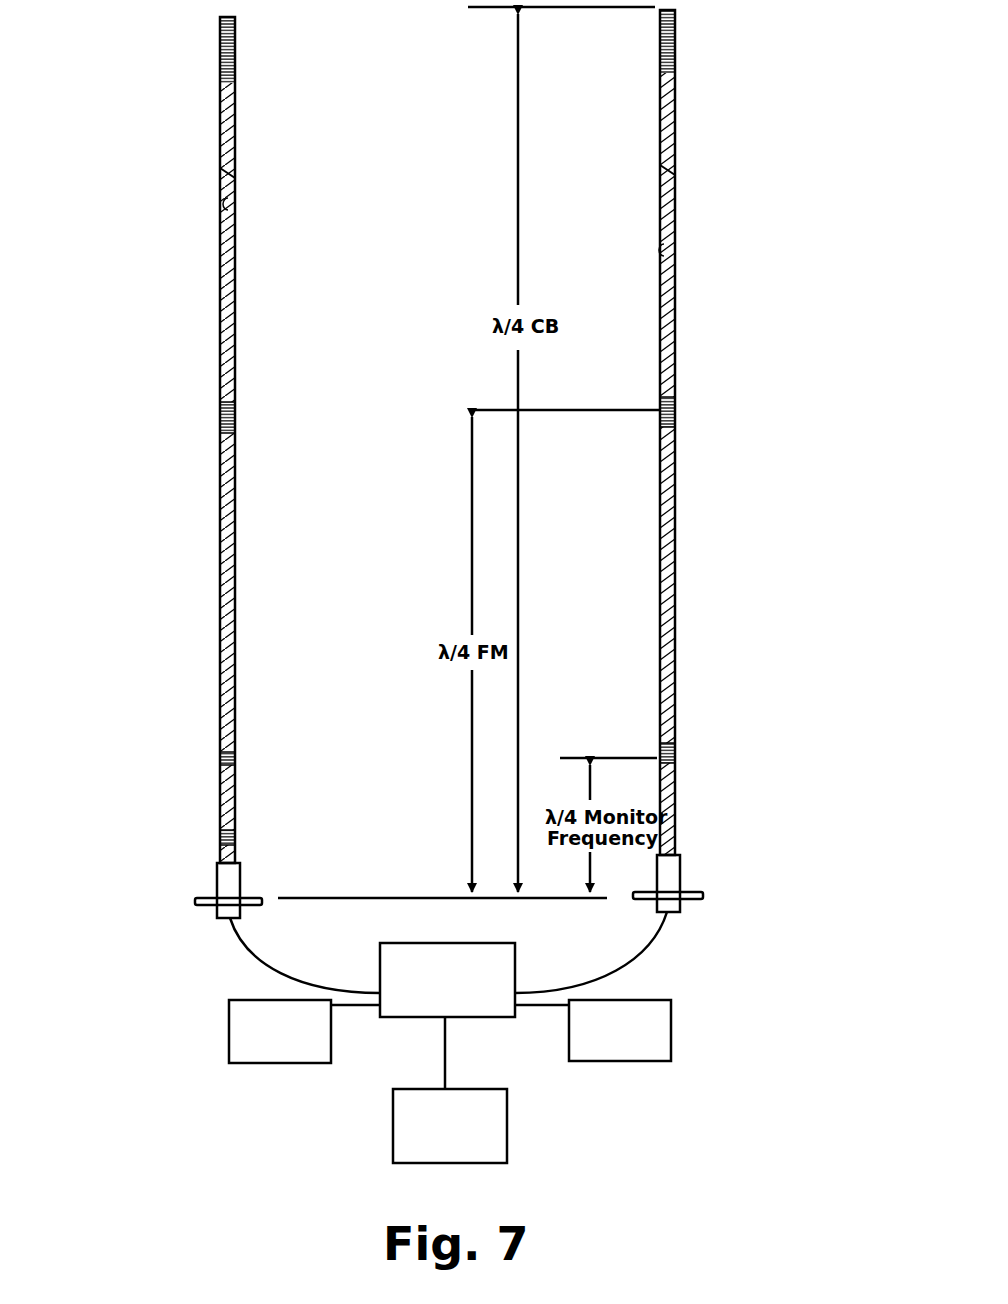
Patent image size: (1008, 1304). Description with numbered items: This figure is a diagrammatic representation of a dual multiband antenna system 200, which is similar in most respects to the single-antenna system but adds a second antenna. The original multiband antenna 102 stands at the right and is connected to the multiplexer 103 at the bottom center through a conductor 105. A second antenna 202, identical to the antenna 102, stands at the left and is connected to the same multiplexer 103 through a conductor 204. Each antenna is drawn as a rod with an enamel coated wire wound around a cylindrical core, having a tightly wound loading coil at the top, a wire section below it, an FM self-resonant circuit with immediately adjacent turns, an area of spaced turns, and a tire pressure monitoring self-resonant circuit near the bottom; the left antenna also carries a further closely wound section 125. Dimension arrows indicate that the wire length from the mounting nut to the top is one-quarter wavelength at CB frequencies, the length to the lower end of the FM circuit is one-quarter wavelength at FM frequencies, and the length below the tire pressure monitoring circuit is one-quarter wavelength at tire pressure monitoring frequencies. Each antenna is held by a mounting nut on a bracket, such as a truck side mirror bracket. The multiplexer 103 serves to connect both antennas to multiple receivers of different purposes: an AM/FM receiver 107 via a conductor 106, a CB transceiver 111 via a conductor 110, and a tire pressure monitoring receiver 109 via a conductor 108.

The antenna system 200 is at (110, 490).
The second antenna 202 is at (298, 286).
The multiband antenna 102 is at (730, 208).
The coil section 125 is at (235, 838).
The conductor 204 is at (300, 977).
The conductor 105 is at (573, 982).
The multiplexer 103 is at (519, 950).
The conductor 110 is at (363, 1007).
The conductor 106 is at (541, 1007).
The conductor 108 is at (450, 1062).
The CB transceiver 111 is at (285, 1063).
The AM/FM receiver 107 is at (671, 1045).
The tire pressure monitoring receiver 109 is at (507, 1115).